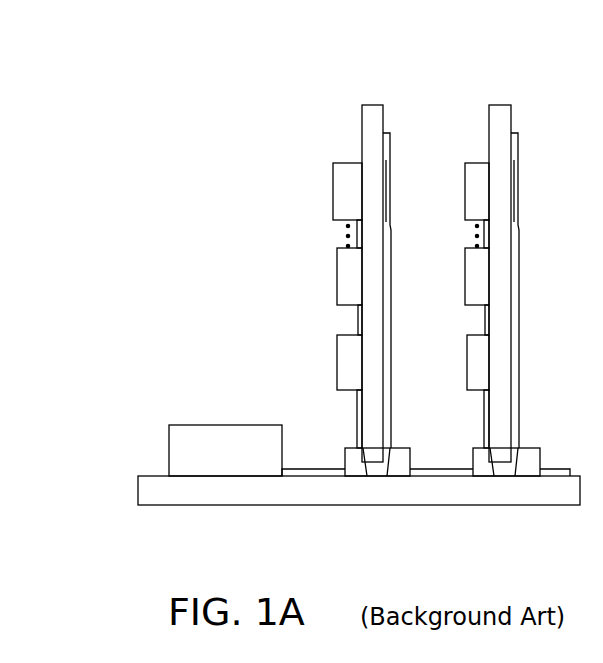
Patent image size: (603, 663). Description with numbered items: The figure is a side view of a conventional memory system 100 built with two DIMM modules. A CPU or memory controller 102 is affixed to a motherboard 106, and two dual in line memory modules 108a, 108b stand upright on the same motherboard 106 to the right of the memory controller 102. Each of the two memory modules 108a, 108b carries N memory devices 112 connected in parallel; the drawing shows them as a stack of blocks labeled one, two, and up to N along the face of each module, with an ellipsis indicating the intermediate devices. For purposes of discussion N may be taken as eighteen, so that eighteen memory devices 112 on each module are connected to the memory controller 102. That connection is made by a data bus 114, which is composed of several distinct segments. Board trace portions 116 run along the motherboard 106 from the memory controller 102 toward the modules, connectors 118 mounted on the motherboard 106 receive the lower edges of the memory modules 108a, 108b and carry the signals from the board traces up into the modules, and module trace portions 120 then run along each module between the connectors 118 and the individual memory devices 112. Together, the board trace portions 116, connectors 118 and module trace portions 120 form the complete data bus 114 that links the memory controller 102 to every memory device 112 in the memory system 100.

The memory system 100 is at (221, 97).
The memory controller 102 is at (228, 425).
The motherboard 106 is at (385, 505).
The dual in line memory module 108a is at (372, 105).
The dual in line memory module 108b is at (500, 105).
The memory devices 112 is at (334, 190).
The data bus 114 is at (302, 469).
The board trace portions 116 is at (312, 469).
The connectors 118 is at (397, 448).
The module trace portions 120 is at (345, 320).